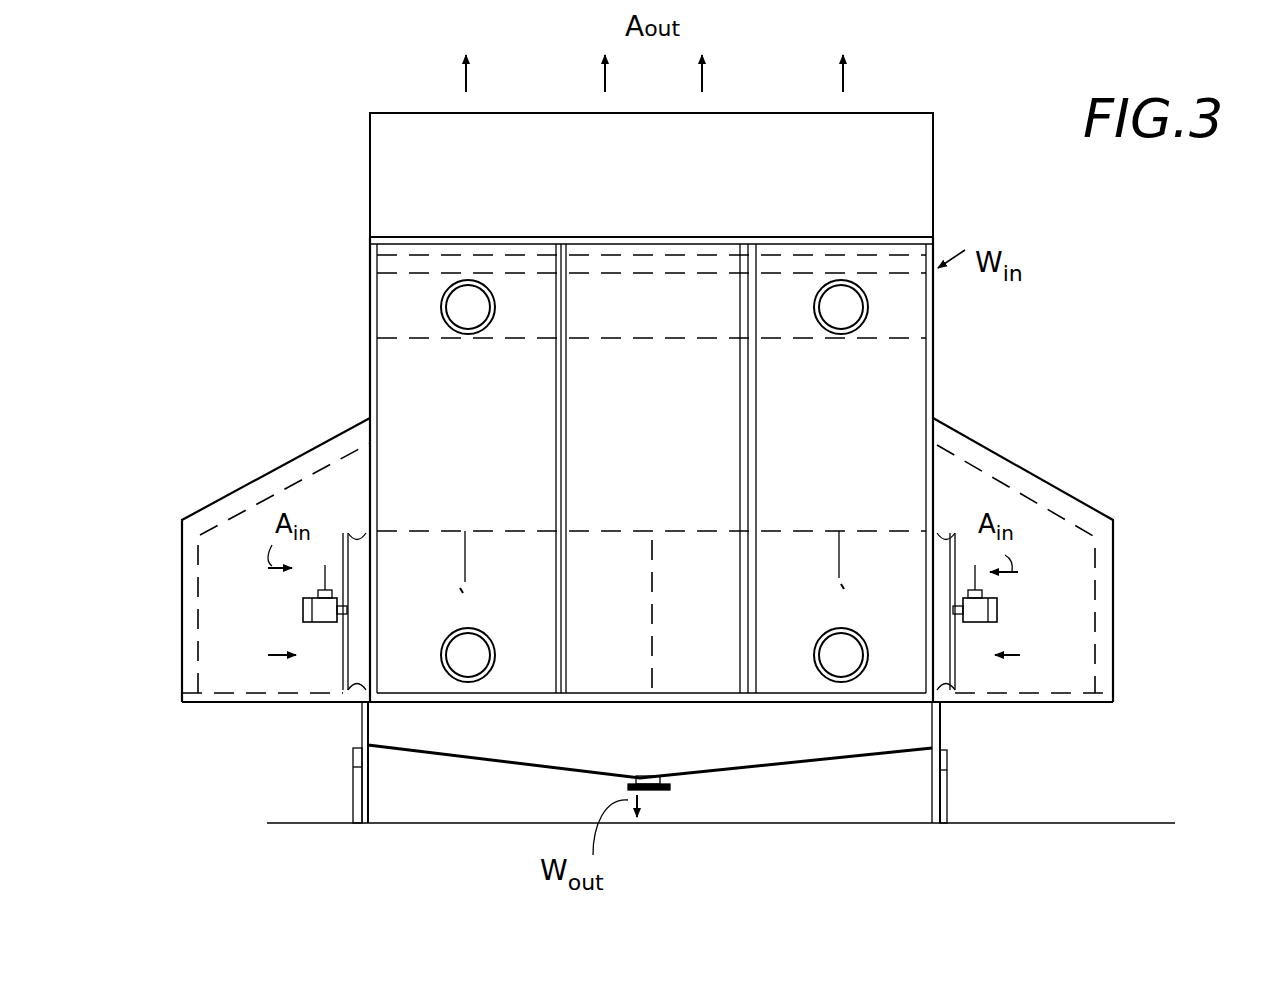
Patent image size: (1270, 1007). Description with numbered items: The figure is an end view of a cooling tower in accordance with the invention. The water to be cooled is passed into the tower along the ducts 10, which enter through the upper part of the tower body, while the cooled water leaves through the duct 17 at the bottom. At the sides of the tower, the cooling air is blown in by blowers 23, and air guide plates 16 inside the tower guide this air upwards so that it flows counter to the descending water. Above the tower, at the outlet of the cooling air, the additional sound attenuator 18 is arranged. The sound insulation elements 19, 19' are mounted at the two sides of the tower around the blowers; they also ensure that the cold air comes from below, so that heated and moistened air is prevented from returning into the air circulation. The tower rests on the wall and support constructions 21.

The ducts 10 is at (841, 307).
The air guide plates 16 is at (468, 562).
The duct 17 is at (655, 790).
The additional sound attenuator 18 is at (924, 148).
The sound insulation element 19 is at (265, 560).
The sound insulation element 19' is at (1064, 560).
The support constructions 21 is at (944, 785).
The blowers 23 is at (318, 626).